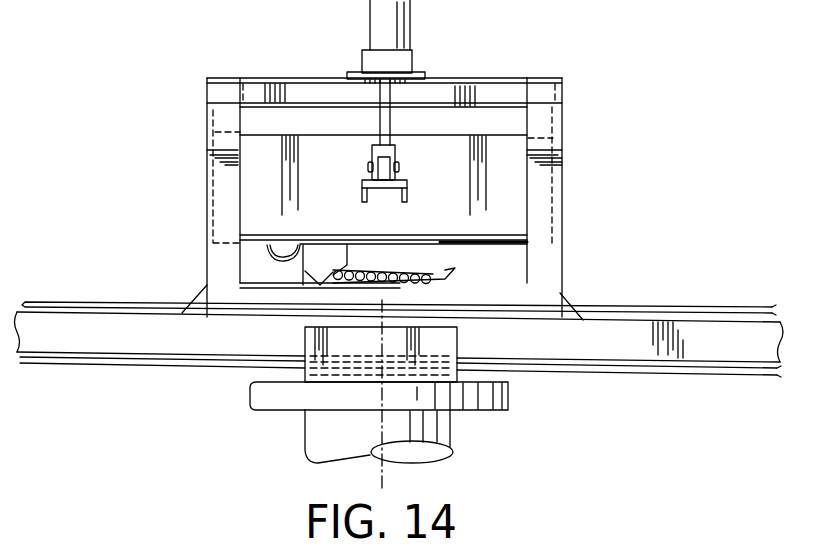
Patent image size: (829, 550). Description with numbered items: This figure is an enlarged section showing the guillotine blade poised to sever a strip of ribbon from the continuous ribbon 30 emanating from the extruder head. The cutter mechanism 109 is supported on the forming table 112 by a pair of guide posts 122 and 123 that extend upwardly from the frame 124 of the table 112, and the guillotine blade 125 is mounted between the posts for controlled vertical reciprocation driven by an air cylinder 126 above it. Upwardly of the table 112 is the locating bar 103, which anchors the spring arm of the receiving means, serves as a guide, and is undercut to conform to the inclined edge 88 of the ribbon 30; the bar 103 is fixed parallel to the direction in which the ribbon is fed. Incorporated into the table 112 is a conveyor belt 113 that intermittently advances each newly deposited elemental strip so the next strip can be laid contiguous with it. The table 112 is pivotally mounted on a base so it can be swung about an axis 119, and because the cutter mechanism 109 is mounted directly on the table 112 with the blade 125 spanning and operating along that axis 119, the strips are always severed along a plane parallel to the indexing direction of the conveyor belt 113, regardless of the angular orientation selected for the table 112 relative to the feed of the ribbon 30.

The air cylinder 126 is at (406, 21).
The cutter mechanism 109 is at (610, 145).
The guide post 122 is at (215, 125).
The guide post 123 is at (563, 114).
The guillotine blade 125 is at (353, 141).
The locating bar 103 is at (323, 253).
The inclined edge 88 is at (312, 273).
The ribbon 30 is at (443, 268).
The conveyor belt 113 is at (657, 310).
The forming table 112 is at (587, 343).
The frame 124 is at (739, 341).
The axis 119 is at (382, 482).